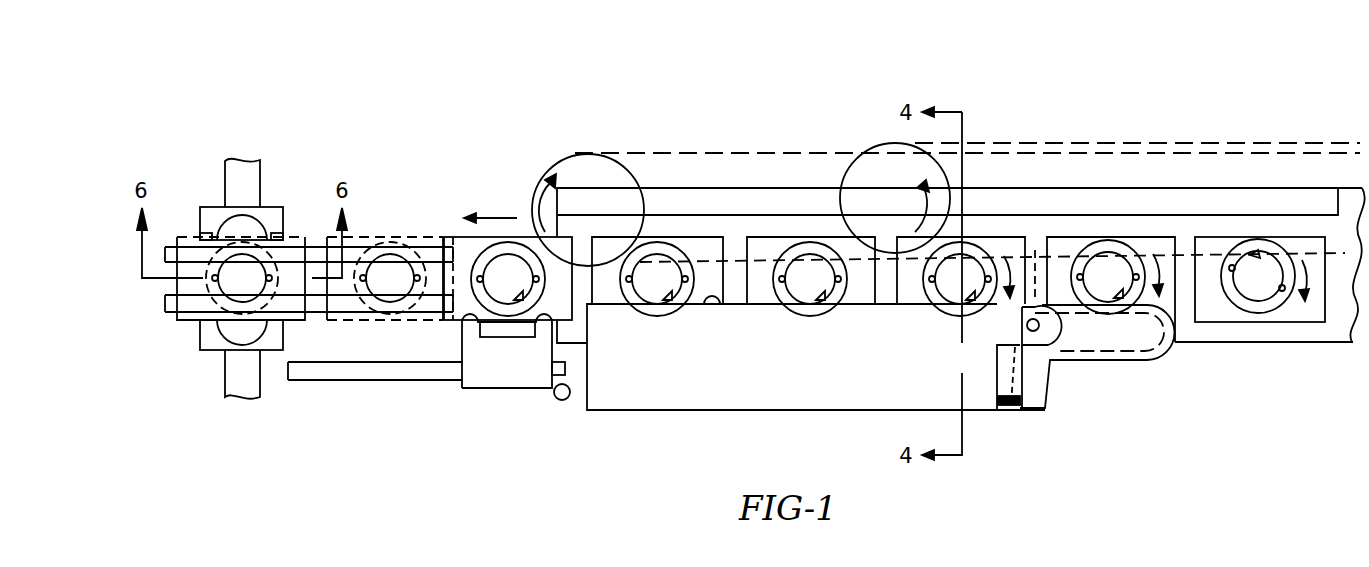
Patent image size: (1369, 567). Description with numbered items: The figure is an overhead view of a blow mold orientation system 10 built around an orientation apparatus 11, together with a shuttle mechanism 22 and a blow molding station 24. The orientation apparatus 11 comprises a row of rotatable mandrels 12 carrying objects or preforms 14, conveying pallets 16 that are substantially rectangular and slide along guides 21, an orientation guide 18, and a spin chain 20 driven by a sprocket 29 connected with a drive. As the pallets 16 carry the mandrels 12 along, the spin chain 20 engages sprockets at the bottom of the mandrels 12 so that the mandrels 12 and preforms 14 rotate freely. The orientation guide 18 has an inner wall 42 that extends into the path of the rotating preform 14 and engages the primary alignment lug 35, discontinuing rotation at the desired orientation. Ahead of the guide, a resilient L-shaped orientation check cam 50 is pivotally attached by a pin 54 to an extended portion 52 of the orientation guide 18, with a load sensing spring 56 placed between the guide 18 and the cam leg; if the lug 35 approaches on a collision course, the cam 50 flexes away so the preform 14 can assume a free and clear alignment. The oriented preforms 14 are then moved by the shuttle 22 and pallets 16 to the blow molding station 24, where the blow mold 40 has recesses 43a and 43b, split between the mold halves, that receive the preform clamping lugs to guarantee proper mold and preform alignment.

The blow mold orientation system 10 is at (658, 94).
The orientation apparatus 11 is at (643, 441).
The rotatable mandrel 12 is at (1127, 247).
The preform 14 is at (667, 252).
The conveying pallet 16 is at (1175, 306).
The orientation guide 18 is at (820, 403).
The spin chain 20 is at (1035, 250).
The guide 21 is at (362, 240).
The shuttle mechanism 22 is at (492, 383).
The blow molding station 24 is at (273, 189).
The sprocket 29 is at (866, 154).
The primary alignment lug 35 is at (832, 302).
The blow mold 40 is at (207, 346).
The inner wall 42 is at (714, 305).
The recess 43a is at (212, 236).
The recess 43b is at (276, 236).
The orientation check cam 50 is at (1100, 351).
The extended portion 52 is at (1010, 323).
The pin 54 is at (1038, 330).
The load sensing spring 56 is at (1008, 405).